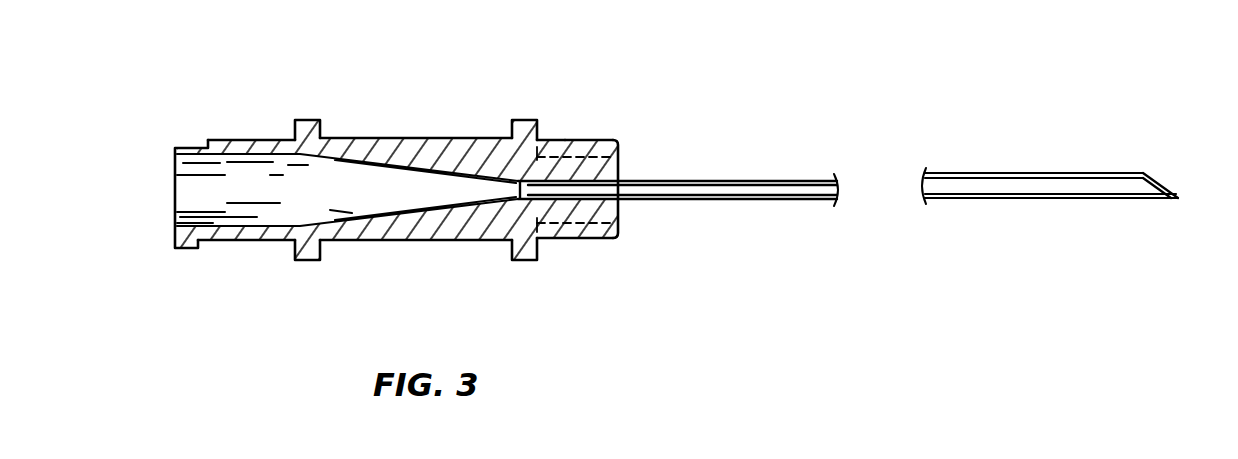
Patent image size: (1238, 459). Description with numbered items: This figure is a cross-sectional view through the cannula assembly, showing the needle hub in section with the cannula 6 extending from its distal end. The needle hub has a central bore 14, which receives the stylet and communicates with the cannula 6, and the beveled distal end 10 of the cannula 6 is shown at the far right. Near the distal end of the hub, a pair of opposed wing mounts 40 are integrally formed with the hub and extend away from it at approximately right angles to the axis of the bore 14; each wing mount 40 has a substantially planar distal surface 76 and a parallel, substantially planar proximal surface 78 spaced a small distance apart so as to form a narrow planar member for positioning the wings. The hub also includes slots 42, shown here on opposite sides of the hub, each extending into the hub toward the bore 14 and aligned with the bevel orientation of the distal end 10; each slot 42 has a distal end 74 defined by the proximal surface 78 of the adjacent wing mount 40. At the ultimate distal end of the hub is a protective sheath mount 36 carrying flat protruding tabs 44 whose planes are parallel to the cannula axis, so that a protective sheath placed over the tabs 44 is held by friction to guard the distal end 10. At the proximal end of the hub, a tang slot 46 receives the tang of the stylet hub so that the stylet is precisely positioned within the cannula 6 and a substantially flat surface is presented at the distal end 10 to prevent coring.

The cannula 6 is at (1010, 172).
The distal end of cannula 10 is at (1140, 157).
The bore 14 is at (185, 194).
The protective sheath mount 36 is at (627, 163).
The wing mount 40 is at (522, 263).
The slot 42 is at (350, 132).
The tab 44 is at (583, 137).
The tang slot 46 is at (178, 143).
The distal end of slot 74 is at (328, 133).
The distal surface of wing mount 76 is at (538, 136).
The proximal surface of wing mount 78 is at (509, 120).